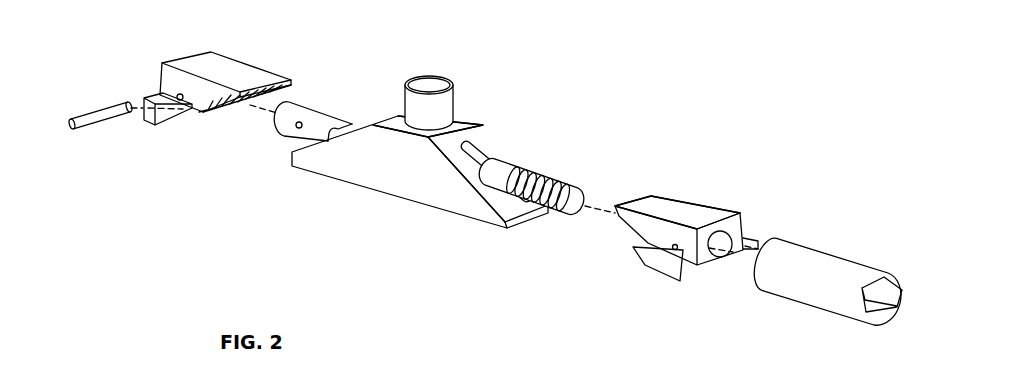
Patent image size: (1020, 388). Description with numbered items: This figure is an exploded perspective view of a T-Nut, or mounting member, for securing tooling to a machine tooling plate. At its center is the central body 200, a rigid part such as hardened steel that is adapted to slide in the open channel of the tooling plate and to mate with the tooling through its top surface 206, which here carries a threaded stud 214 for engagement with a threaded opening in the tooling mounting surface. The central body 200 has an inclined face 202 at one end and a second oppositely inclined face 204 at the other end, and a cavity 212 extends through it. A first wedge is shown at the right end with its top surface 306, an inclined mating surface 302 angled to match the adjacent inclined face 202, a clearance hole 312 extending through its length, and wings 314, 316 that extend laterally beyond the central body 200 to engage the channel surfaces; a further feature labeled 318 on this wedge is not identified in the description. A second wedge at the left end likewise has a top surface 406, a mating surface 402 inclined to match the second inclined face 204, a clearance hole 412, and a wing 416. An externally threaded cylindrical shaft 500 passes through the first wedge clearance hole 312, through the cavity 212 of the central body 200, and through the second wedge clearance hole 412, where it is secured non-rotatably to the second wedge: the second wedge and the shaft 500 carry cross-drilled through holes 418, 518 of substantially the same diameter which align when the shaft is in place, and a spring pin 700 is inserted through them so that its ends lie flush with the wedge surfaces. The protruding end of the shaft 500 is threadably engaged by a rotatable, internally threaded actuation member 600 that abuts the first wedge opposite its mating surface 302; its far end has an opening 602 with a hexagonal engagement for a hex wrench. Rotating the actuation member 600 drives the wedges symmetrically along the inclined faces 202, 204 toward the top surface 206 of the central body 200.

The central body 200 is at (426, 161).
The inclined face 202 is at (447, 156).
The second oppositely inclined face 204 is at (328, 134).
The top surface 206 is at (462, 127).
The cavity 212 is at (483, 153).
The threaded stud 214 is at (412, 102).
The mating surface 302 is at (684, 232).
The top surface 306 is at (673, 203).
The clearance hole 312 is at (733, 240).
The wing 314 is at (752, 242).
The wing 316 is at (657, 252).
The pin hole 318 is at (677, 250).
The mating surface 402 is at (202, 106).
The top surface 406 is at (238, 67).
The clearance hole 412 is at (233, 111).
The wing 416 is at (187, 108).
The cross-drilled through hole 418 is at (176, 95).
The externally threaded cylindrical shaft 500 is at (540, 173).
The cross-drilled through hole 518 is at (297, 128).
The actuation member 600 is at (828, 294).
The opening 602 is at (880, 310).
The spring pin 700 is at (105, 113).